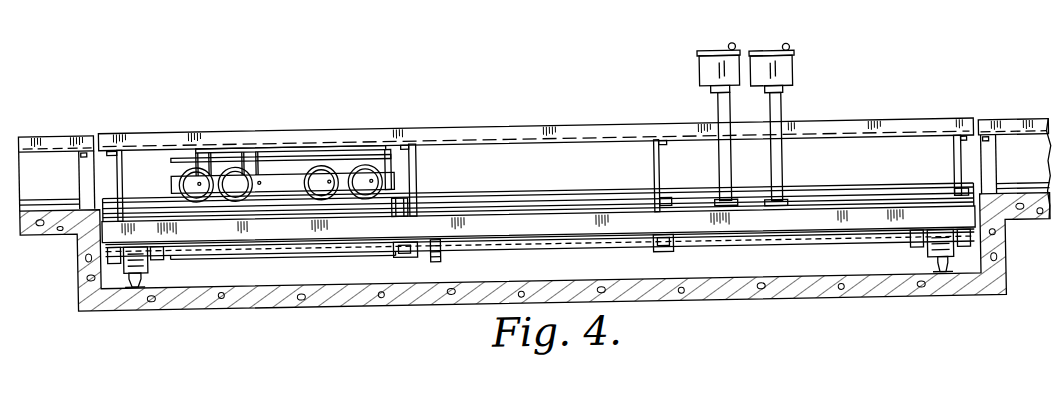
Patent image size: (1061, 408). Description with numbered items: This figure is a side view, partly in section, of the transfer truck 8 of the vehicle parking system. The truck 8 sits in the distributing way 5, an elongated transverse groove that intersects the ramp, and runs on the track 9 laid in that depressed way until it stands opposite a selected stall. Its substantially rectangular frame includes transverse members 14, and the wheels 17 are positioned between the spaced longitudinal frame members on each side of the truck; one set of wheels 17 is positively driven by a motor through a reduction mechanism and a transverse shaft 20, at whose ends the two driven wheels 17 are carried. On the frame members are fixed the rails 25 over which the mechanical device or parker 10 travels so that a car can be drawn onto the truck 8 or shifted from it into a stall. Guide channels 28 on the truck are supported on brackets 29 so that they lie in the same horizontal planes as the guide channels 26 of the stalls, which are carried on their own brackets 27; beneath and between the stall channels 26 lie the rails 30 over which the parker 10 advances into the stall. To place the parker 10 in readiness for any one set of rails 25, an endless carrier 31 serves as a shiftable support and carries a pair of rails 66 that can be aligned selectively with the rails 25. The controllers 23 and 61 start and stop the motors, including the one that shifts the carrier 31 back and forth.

The distributing way 5 is at (540, 258).
The transfer truck 8 is at (572, 225).
The track 9 is at (143, 277).
The mechanical device 10 is at (170, 176).
The transverse member 14 is at (465, 226).
The wheel 17 is at (147, 265).
The transverse shaft 20 is at (760, 250).
The controller 23 is at (702, 78).
The rail 25 is at (569, 173).
The guide channel 26 is at (49, 137).
The bracket 27 is at (78, 172).
The guide channel 28 is at (536, 135).
The bracket 29 is at (126, 154).
The rail 30 is at (1030, 176).
The endless carrier 31 is at (340, 253).
The controller 61 is at (792, 78).
The rail 66 is at (380, 196).